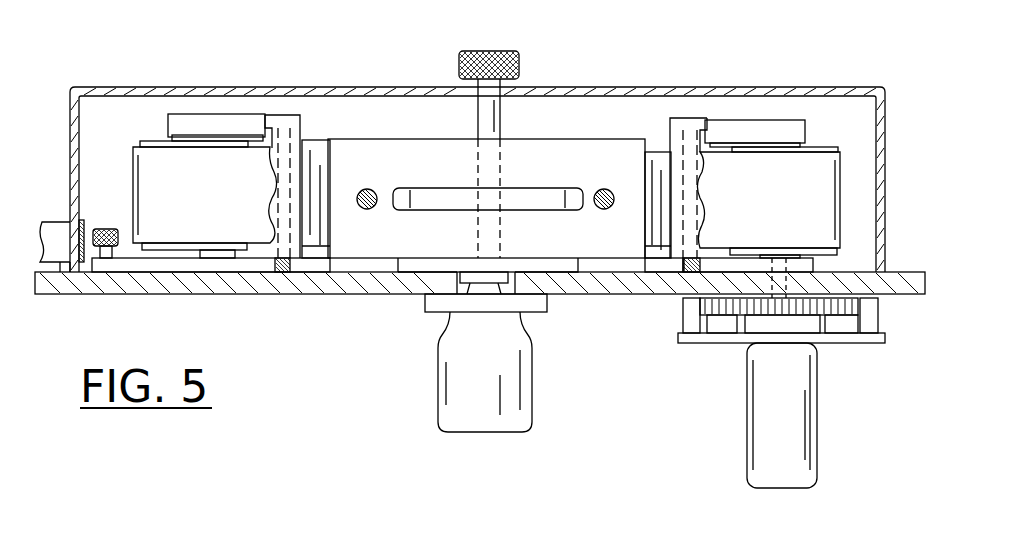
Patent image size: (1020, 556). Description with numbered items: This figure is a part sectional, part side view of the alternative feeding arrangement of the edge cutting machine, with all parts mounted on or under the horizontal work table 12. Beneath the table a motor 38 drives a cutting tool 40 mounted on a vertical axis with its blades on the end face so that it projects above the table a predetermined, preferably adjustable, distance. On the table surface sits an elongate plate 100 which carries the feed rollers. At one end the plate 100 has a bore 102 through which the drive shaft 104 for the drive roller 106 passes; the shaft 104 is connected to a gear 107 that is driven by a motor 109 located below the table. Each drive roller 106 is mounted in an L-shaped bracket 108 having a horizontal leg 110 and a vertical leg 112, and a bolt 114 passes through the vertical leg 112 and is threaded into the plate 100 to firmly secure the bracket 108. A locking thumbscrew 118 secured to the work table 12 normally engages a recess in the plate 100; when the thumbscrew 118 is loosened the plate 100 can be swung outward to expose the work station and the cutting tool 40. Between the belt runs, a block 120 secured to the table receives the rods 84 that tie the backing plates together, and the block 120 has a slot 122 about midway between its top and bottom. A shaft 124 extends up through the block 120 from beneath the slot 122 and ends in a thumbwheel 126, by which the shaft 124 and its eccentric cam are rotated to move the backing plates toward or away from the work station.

The work table 12 is at (291, 294).
The motor 38 is at (440, 372).
The cutting tool 40 is at (492, 270).
The rods 84 is at (366, 189).
The elongate plate 100 is at (168, 262).
The bore 102 is at (803, 292).
The drive shaft 104 is at (786, 273).
The drive roller 106 is at (813, 146).
The gear 107 is at (727, 314).
The L-shaped bracket 108 is at (158, 108).
The motor 109 is at (747, 426).
The horizontal leg 110 is at (197, 114).
The vertical leg 112 is at (303, 139).
The bolt 114 is at (290, 115).
The locking thumbscrew 118 is at (108, 228).
The block 120 is at (442, 248).
The slot 122 is at (544, 197).
The shaft 124 is at (502, 119).
The thumbwheel 126 is at (497, 51).